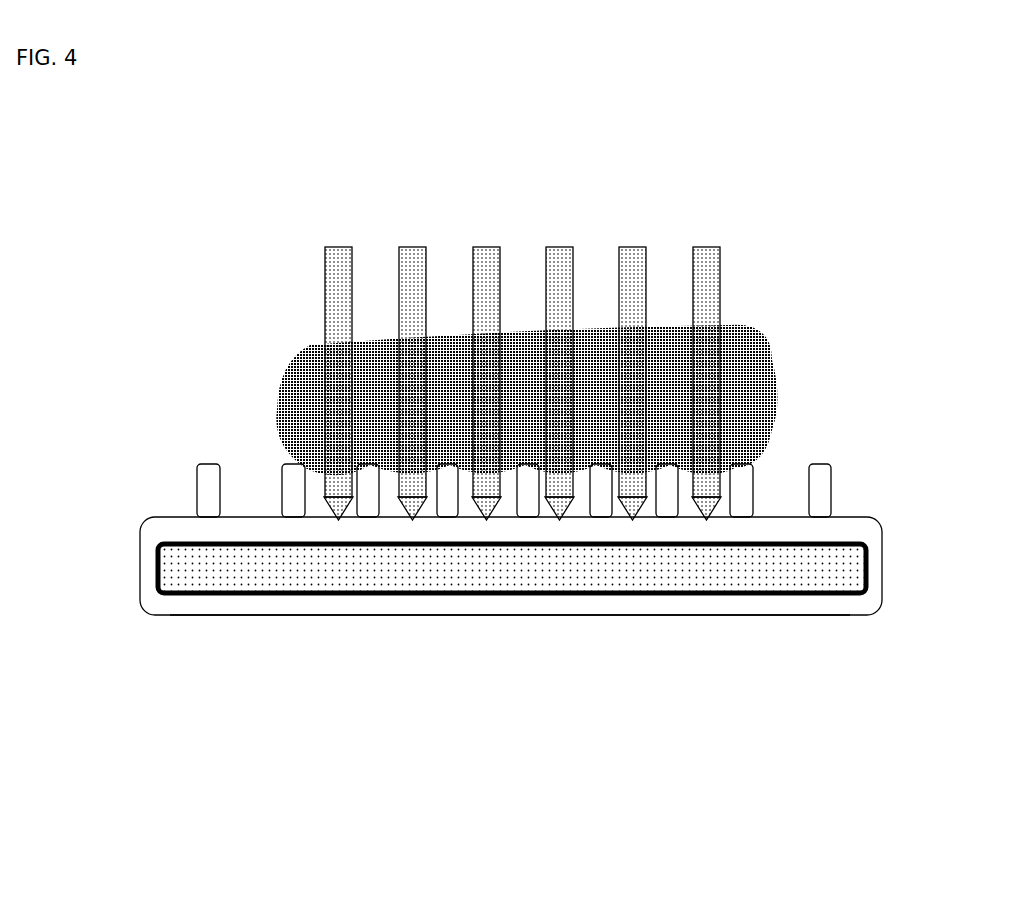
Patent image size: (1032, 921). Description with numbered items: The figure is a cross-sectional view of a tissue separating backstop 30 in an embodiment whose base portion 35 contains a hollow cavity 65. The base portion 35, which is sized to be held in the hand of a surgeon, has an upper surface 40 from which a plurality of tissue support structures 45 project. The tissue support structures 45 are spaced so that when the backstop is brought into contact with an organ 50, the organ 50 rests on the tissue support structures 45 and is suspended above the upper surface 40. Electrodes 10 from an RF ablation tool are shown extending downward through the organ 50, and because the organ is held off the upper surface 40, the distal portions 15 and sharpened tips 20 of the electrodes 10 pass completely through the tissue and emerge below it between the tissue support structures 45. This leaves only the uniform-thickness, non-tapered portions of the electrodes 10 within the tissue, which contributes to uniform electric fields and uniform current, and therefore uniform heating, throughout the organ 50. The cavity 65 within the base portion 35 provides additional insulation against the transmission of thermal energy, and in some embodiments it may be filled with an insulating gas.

The electrodes 10 is at (329, 292).
The distal portions 15 is at (384, 500).
The sharpened tips 20 is at (419, 530).
The tissue separating backstop 30 is at (490, 395).
The base portion 35 is at (791, 618).
The upper surface 40 is at (869, 502).
The tissue support structures 45 is at (822, 469).
The organ 50 is at (767, 360).
The cavity 65 is at (547, 588).